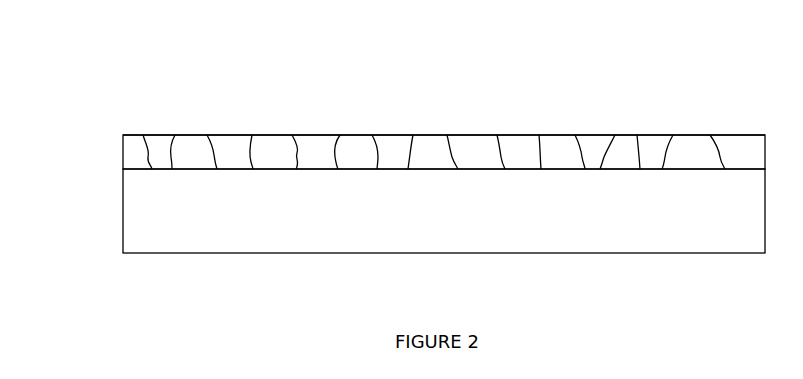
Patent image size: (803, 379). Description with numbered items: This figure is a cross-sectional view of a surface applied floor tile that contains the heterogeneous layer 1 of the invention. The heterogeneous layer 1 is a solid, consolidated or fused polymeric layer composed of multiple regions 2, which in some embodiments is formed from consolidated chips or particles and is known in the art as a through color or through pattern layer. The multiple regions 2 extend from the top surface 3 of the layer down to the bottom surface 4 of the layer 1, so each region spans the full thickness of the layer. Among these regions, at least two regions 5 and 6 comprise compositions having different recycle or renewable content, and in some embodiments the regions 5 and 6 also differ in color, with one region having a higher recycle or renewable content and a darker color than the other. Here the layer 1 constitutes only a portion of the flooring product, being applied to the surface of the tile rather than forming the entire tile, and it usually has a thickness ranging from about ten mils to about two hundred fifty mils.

The heterogeneous layer 1 is at (500, 134).
The multiple regions 2 is at (140, 149).
The top surface 3 is at (732, 135).
The bottom surface 4 is at (731, 258).
The first region 5 is at (223, 150).
The second region 6 is at (359, 150).